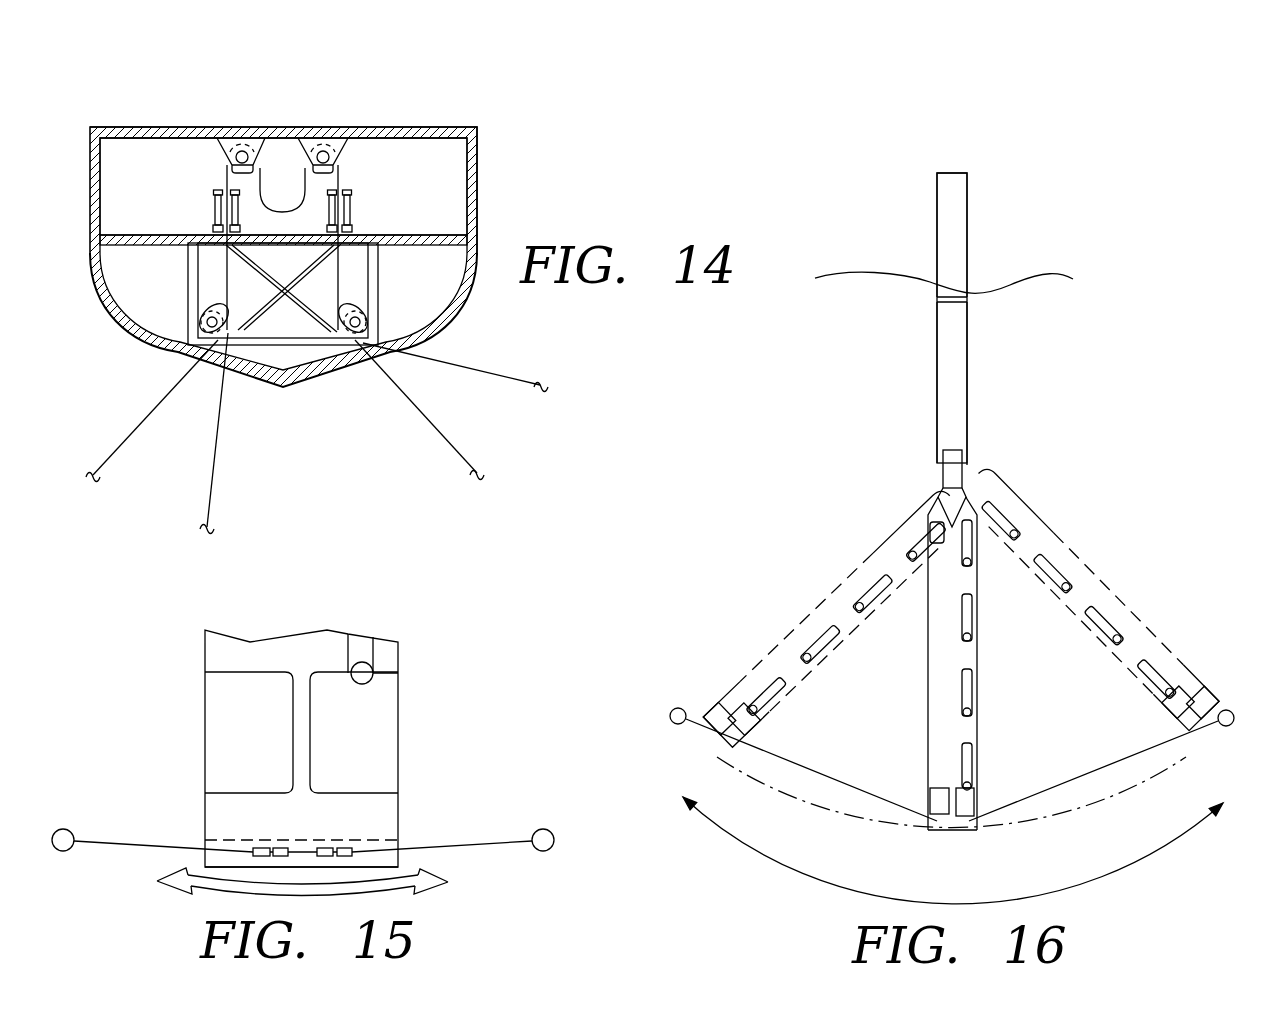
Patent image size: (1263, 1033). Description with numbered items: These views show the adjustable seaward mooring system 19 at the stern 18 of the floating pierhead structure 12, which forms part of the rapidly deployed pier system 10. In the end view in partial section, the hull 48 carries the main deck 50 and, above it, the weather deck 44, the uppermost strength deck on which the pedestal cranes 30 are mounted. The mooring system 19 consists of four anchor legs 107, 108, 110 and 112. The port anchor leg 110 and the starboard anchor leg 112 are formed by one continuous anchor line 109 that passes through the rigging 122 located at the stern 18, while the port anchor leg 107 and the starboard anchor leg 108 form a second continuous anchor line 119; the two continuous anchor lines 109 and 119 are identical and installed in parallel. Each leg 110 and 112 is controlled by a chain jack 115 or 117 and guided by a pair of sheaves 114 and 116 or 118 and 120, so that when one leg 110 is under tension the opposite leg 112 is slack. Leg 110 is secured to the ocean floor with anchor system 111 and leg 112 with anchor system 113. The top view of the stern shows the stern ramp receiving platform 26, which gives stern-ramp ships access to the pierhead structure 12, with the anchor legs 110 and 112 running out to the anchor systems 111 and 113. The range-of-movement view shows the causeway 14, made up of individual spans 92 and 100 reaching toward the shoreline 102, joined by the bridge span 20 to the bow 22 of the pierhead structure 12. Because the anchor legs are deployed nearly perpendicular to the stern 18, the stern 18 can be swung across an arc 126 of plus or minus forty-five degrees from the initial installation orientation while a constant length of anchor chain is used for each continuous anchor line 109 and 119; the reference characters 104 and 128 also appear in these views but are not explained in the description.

In FIG. 16, the rapidly deployed pier system 10 is at (1091, 437).
In FIG. 15, the floating pierhead structure 12 is at (401, 660).
In FIG. 16, the floating pierhead structure 12 is at (926, 576).
In FIG. 16, the causeway 14 is at (936, 343).
In FIG. 14, the stern 18 is at (501, 167).
In FIG. 15, the stern 18 is at (434, 861).
In FIG. 14, the adjustable seaward mooring system 19 is at (436, 164).
In FIG. 16, the bridge span 20 is at (962, 468).
In FIG. 16, the bow 22 is at (945, 493).
In FIG. 15, the stern ramp receiving platform 26 is at (243, 760).
In FIG. 15, the pedestal cranes 30 is at (361, 682).
In FIG. 14, the weather deck 44 is at (121, 127).
In FIG. 15, the weather deck 44 is at (321, 644).
In FIG. 14, the hull 48 is at (107, 309).
In FIG. 14, the main deck 50 is at (452, 238).
In FIG. 16, the span 92 is at (958, 375).
In FIG. 16, the span 100 is at (947, 228).
In FIG. 16, the shoreline 102 is at (1003, 259).
In FIG. 16, the lower section 104 is at (1003, 331).
In FIG. 14, the anchor leg 107 is at (217, 460).
In FIG. 14, the anchor leg 108 is at (507, 370).
In FIG. 14, the continuous anchor line 109 is at (154, 399).
In FIG. 14, the anchor leg 110 is at (113, 448).
In FIG. 15, the anchor leg 110 is at (130, 840).
In FIG. 16, the anchor leg 110 is at (857, 785).
In FIG. 15, the anchor system 111 is at (63, 828).
In FIG. 16, the anchor system 111 is at (679, 707).
In FIG. 14, the anchor leg 112 is at (463, 467).
In FIG. 15, the anchor leg 112 is at (473, 843).
In FIG. 16, the anchor leg 112 is at (1053, 788).
In FIG. 15, the anchor system 113 is at (543, 828).
In FIG. 16, the anchor system 113 is at (1226, 709).
In FIG. 14, the sheave 114 is at (218, 312).
In FIG. 14, the chain jack 115 is at (213, 218).
In FIG. 14, the sheave 116 is at (228, 178).
In FIG. 14, the chain jack 117 is at (352, 218).
In FIG. 14, the sheave 118 is at (338, 178).
In FIG. 14, the continuous anchor line 119 is at (221, 422).
In FIG. 14, the sheave 120 is at (346, 312).
In FIG. 14, the rigging 122 is at (303, 333).
In FIG. 16, the arc 126 is at (950, 898).
In FIG. 15, the sliding motion 128 is at (187, 887).